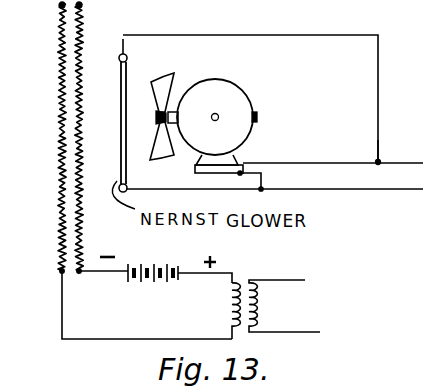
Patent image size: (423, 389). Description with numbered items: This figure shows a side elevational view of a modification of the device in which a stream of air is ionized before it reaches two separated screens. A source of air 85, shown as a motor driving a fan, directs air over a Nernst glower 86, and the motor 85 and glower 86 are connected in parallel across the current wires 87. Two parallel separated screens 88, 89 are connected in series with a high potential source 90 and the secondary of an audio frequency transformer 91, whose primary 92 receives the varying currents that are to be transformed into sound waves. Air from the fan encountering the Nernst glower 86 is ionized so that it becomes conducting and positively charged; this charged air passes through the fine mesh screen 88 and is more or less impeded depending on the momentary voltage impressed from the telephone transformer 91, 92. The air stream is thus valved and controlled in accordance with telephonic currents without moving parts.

The source of air 85 is at (241, 100).
The Nernst glower 86 is at (116, 158).
The current wires 87 is at (391, 167).
The fine mesh screen 88 is at (97, 136).
The screen 89 is at (55, 235).
The high potential source 90 is at (183, 266).
The audio frequency transformer secondary 91 is at (223, 316).
The primary 92 is at (272, 306).